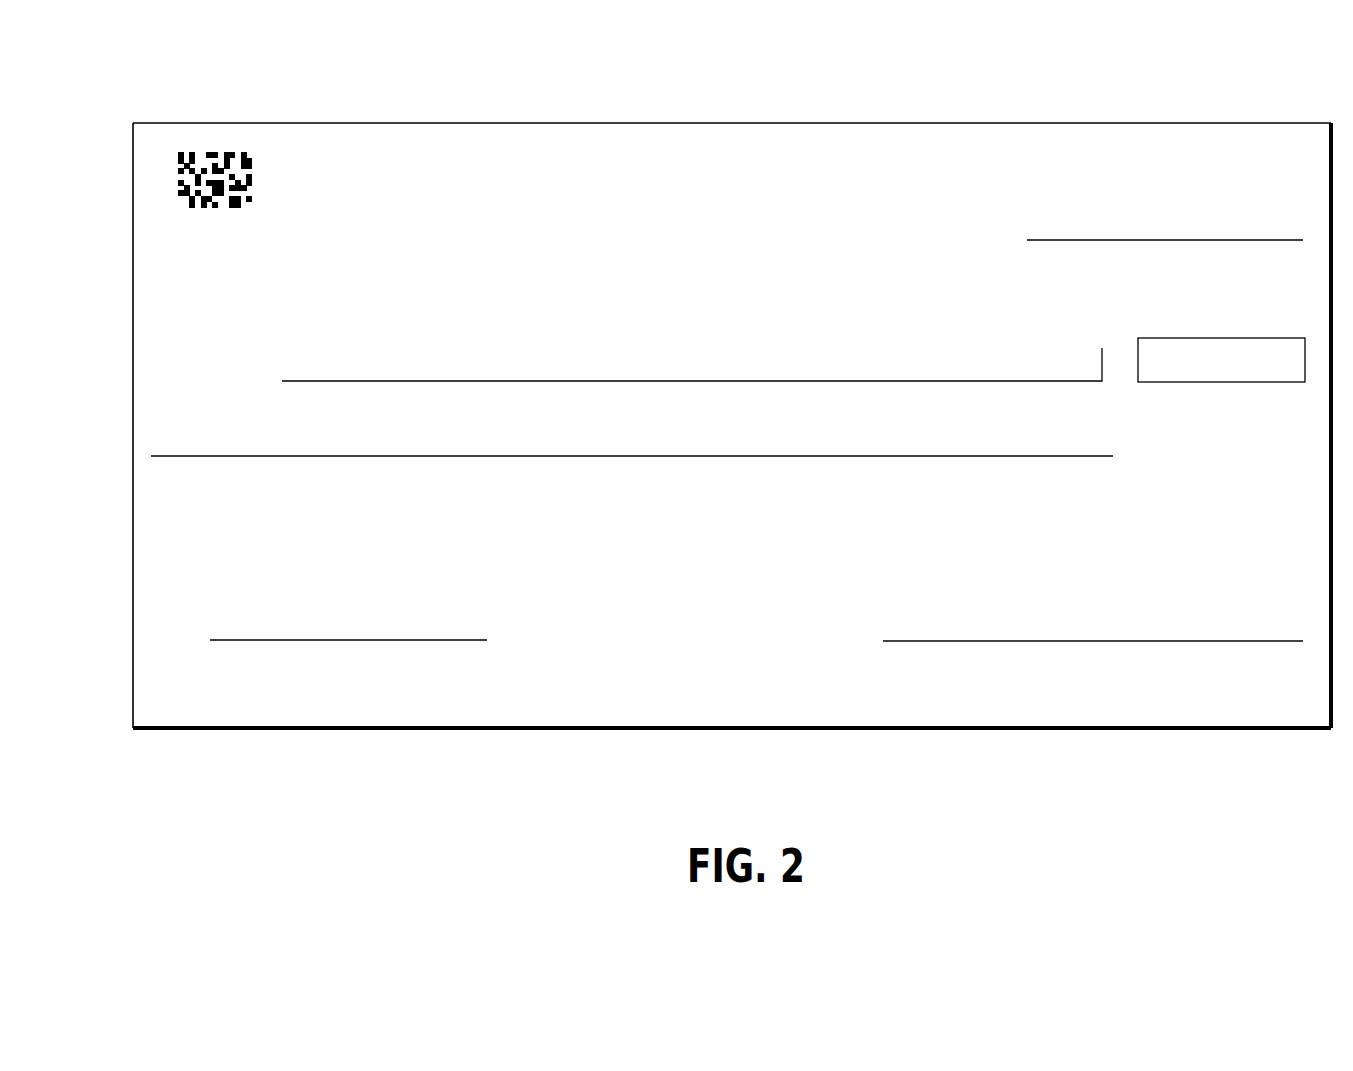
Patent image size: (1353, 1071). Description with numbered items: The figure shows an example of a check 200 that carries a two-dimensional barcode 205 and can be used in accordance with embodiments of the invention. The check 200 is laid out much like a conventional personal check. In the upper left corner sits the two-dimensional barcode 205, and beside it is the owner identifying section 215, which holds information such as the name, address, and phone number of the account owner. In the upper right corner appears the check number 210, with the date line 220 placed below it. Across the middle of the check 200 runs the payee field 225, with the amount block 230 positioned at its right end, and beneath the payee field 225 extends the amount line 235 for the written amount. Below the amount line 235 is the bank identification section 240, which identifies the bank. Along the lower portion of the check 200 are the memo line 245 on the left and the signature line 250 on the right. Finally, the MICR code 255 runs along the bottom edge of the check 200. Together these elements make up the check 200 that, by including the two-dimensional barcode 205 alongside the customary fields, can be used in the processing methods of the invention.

The check 200 is at (1240, 95).
The 2D barcode 205 is at (208, 143).
The check number 210 is at (1255, 165).
The owner identifying section 215 is at (421, 131).
The date line 220 is at (985, 210).
The payee field 225 is at (307, 381).
The amount block 230 is at (1213, 338).
The amount line 235 is at (299, 456).
The bank identification section 240 is at (407, 518).
The memo line 245 is at (218, 631).
The signature line 250 is at (885, 641).
The MICR code 255 is at (520, 671).